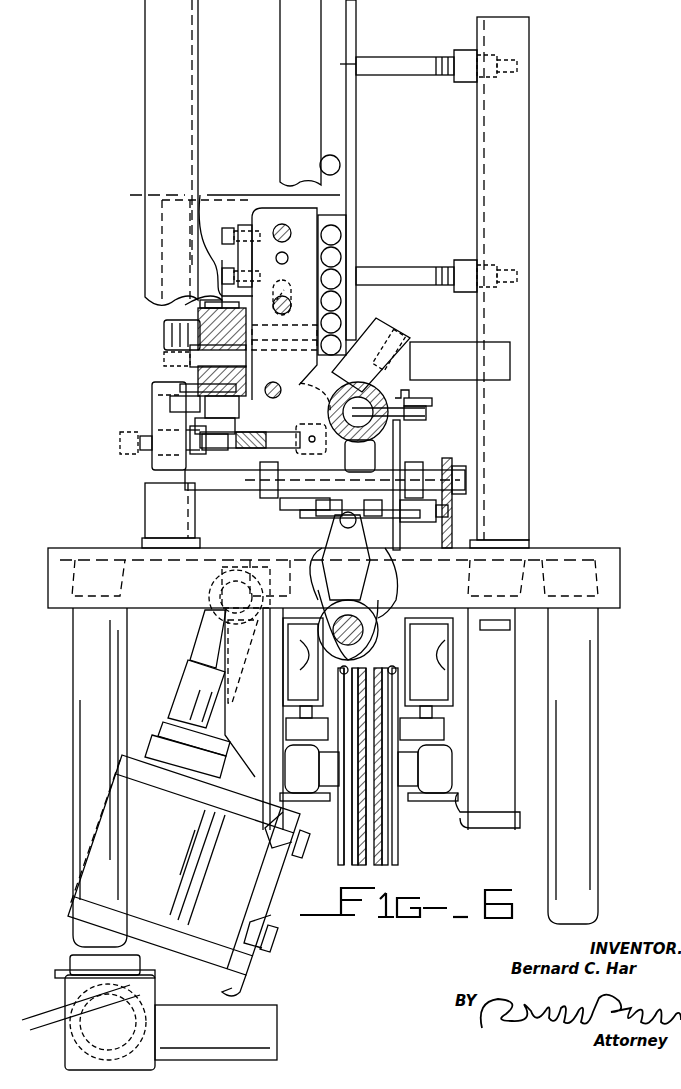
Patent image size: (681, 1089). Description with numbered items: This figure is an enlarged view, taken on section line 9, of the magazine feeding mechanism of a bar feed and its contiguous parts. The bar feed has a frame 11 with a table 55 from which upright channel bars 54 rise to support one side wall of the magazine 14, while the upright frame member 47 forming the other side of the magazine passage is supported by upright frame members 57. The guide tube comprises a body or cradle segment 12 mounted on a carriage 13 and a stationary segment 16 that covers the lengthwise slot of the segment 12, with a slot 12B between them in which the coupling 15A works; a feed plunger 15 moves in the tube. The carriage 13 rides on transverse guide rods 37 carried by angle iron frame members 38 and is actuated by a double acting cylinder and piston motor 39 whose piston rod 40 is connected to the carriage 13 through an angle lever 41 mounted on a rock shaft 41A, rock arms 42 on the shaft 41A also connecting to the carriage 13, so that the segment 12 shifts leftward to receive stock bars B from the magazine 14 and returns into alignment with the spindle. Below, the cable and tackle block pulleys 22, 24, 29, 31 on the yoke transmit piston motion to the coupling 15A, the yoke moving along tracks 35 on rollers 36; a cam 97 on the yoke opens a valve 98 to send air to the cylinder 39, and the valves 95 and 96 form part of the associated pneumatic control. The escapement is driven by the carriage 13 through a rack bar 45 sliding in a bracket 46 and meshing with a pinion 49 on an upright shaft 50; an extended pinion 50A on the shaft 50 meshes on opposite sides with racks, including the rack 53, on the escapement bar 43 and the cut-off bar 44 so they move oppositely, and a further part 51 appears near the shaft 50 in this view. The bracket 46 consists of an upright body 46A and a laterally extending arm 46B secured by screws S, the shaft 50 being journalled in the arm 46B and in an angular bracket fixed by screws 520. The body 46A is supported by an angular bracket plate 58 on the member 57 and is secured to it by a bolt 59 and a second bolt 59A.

The section line 9- 9 is at (233, 220).
The frame 11 is at (73, 676).
The body or cradle segment 12 is at (385, 428).
The slot 12B is at (400, 400).
The carriage 13 is at (390, 458).
The magazine 14 is at (352, 198).
The feed plunger 15 is at (360, 456).
The coupling 15A is at (428, 415).
The stationary segment 16 is at (398, 378).
The tackle block pulley 22 is at (385, 866).
The second tackle block pulley 24 is at (358, 868).
The tackle block pulley 29 is at (342, 866).
The tackle block pulley 31 is at (398, 860).
The tracks 35 is at (470, 812).
The rollers 36 is at (452, 750).
The transverse guide rods 37 is at (466, 482).
The angle iron frame members 38 is at (452, 462).
The double acting cylinder and piston motor 39 is at (189, 875).
The piston rod 40 is at (192, 694).
The angle lever 41 is at (262, 598).
The rock shaft 41A is at (380, 614).
The rock arms 42 is at (349, 580).
The escapement bar 43 is at (164, 358).
The cut-off bar 44 is at (164, 336).
The rack bar 45 is at (140, 450).
The bracket 46 is at (152, 415).
The upright body 46A is at (283, 198).
The laterally extending arm 46B is at (190, 396).
The upright frame member 47 is at (280, 145).
The pinion 49 is at (200, 450).
The upright shaft 50 is at (218, 450).
The extended pinion 50A is at (246, 333).
The shaft 51 is at (222, 278).
The screws 520 is at (222, 236).
The rack 53 is at (200, 318).
The upright channel bars 54 is at (531, 206).
The table 55 is at (614, 560).
The upright frame members 57 is at (150, 150).
The angular bracket plate 58 is at (238, 215).
The bolt 59 is at (286, 226).
The second bolt 59A is at (285, 298).
The pilot operated normally closed valve 95 is at (444, 730).
The normally closed valve 96 is at (429, 662).
The cam 97 is at (300, 730).
The valve 98 is at (303, 662).
The stock bars B is at (330, 155).
The screws S is at (160, 392).